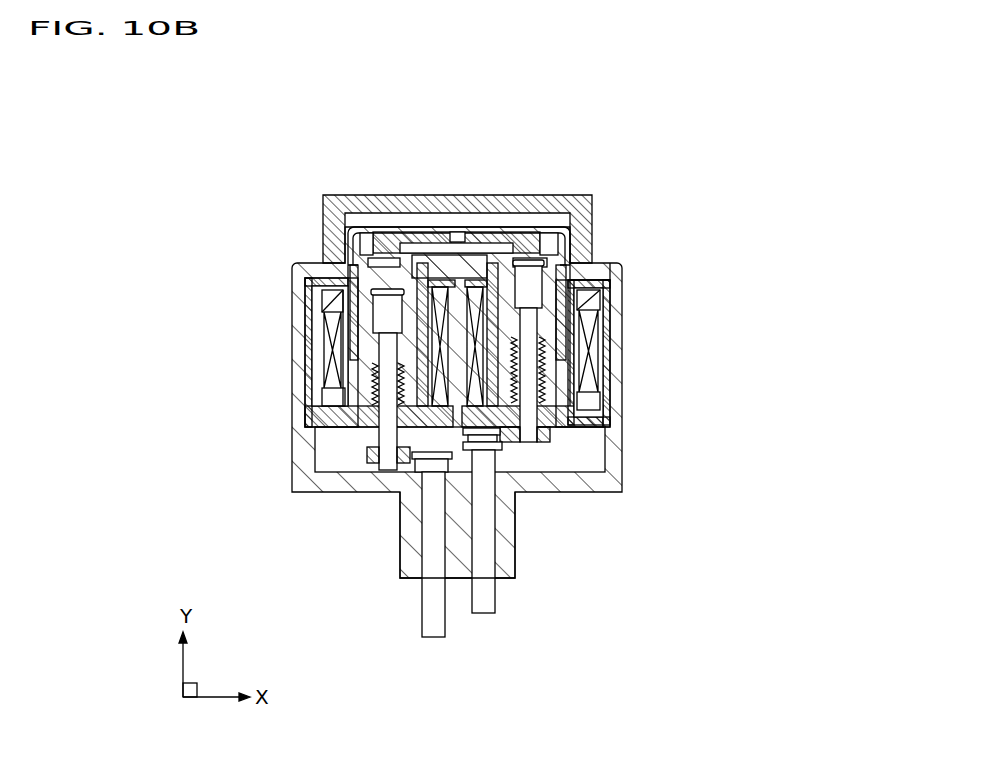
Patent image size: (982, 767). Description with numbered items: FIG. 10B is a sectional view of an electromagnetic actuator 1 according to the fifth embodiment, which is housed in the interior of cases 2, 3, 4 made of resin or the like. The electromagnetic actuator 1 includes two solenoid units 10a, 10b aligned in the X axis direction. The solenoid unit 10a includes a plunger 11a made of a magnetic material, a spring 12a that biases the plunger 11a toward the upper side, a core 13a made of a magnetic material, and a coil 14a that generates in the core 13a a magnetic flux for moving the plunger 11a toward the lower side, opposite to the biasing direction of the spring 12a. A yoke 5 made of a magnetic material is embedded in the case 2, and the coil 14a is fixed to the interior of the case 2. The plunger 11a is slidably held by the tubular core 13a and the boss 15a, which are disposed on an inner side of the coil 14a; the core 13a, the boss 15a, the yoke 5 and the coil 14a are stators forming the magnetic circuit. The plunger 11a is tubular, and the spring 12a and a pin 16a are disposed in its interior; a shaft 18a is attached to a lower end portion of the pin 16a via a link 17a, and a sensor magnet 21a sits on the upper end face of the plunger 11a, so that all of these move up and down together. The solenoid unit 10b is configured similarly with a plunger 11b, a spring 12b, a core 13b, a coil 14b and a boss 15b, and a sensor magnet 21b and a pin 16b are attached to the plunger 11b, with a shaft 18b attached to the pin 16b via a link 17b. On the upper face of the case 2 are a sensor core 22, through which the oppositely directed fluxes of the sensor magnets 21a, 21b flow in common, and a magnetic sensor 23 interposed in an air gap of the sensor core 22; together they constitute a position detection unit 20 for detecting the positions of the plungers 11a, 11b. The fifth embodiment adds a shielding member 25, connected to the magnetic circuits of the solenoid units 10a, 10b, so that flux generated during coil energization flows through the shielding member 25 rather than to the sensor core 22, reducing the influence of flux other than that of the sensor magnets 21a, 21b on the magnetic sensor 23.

The electromagnetic actuator 1 is at (603, 117).
The case 2 is at (594, 236).
The case 3 is at (592, 199).
The case 4 is at (507, 578).
The yoke 5 is at (597, 276).
The solenoid unit 10a is at (334, 441).
The solenoid unit 10b is at (592, 440).
The plunger 11a is at (308, 297).
The plunger 11b is at (604, 308).
The spring 12a is at (372, 380).
The spring 12b is at (548, 342).
The core 13a is at (328, 336).
The core 13b is at (592, 346).
The coil 14a is at (333, 362).
The coil 14b is at (590, 373).
The boss 15a is at (327, 394).
The boss 15b is at (594, 397).
The pin 16a is at (388, 472).
The pin 16b is at (527, 444).
The link 17a is at (366, 466).
The link 17b is at (550, 440).
The shaft 18a is at (433, 638).
The shaft 18b is at (483, 614).
The position detection unit 20 is at (412, 220).
The sensor magnet 21a is at (367, 258).
The sensor magnet 21b is at (540, 240).
The sensor core 22 is at (531, 236).
The magnetic sensor 23 is at (452, 243).
The shielding member 25 is at (368, 227).